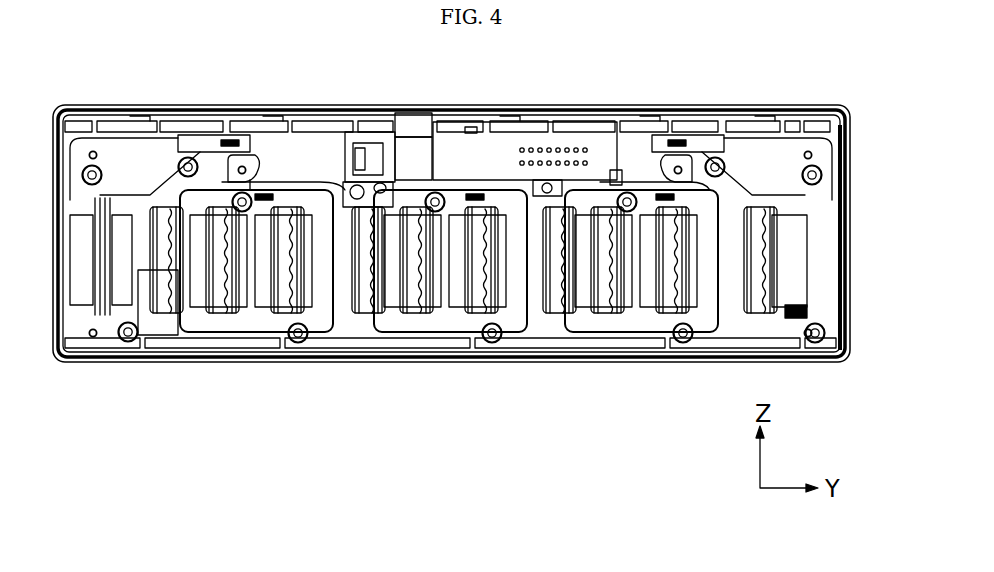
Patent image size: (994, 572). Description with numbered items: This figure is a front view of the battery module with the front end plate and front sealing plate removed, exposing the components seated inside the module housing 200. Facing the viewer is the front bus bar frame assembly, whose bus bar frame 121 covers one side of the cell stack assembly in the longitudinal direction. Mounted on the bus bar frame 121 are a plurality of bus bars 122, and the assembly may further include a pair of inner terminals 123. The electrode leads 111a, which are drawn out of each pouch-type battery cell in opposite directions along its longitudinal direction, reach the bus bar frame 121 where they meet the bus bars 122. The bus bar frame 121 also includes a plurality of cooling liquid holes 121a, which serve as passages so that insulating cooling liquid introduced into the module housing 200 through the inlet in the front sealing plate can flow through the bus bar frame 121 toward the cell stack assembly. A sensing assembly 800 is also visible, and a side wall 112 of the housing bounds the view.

The electrode lead 111a is at (118, 297).
The side wall of housing 112 is at (750, 250).
The bus bar frame 121 is at (822, 136).
The cooling liquid hole 121a is at (190, 258).
The bus bar 122 is at (320, 326).
The inner terminal 123 is at (136, 158).
The module housing 200 is at (648, 112).
The sensing assembly 800 is at (457, 158).